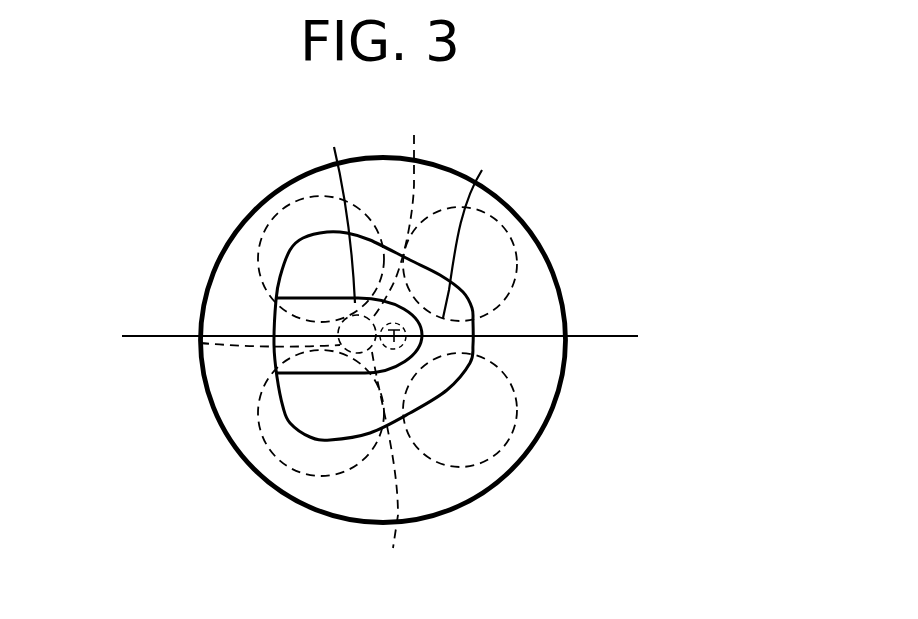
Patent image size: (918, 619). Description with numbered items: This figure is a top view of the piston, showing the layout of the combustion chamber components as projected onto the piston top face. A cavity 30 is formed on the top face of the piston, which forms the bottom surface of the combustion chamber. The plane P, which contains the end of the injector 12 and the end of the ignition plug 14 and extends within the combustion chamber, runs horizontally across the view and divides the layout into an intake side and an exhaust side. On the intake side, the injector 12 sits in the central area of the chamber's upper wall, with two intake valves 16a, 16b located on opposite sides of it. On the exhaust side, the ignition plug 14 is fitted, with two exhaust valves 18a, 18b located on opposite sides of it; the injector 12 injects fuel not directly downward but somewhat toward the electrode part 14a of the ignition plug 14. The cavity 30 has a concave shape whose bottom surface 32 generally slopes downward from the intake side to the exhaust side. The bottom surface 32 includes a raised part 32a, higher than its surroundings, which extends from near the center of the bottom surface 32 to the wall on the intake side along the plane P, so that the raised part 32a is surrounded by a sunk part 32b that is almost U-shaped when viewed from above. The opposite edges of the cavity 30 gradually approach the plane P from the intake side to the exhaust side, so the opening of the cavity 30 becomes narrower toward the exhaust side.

The injector 12 is at (214, 349).
The ignition plug 14 is at (404, 208).
The electrode part 14a is at (397, 468).
The intake valve 16a is at (266, 224).
The intake valve 16b is at (258, 442).
The exhaust valve 18a is at (526, 228).
The exhaust valve 18b is at (522, 449).
The cavity 30 is at (482, 331).
The bottom surface 32 is at (322, 281).
The raised part 32a is at (324, 209).
The sunk part 32b is at (489, 228).
The plane P is at (620, 338).